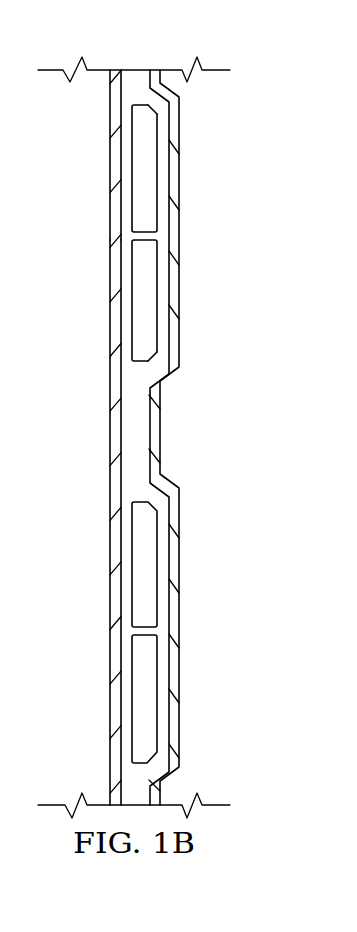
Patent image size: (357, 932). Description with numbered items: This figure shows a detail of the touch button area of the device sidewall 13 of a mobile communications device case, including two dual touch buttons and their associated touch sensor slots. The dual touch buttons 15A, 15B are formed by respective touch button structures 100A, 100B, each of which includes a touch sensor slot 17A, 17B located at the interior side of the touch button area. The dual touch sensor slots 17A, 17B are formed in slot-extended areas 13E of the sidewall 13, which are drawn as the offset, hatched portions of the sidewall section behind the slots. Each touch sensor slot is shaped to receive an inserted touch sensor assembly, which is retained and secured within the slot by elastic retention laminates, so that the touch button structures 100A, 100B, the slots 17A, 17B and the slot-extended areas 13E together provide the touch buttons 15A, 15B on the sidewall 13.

The device sidewall 13 is at (140, 77).
The slot-extended areas 13E is at (176, 236).
The touch button 15A is at (110, 173).
The touch button 15B is at (110, 283).
The touch sensor slot 17A is at (148, 177).
The touch sensor slot 17B is at (148, 302).
The touch button structure 100A is at (148, 106).
The touch button structure 100B is at (145, 363).